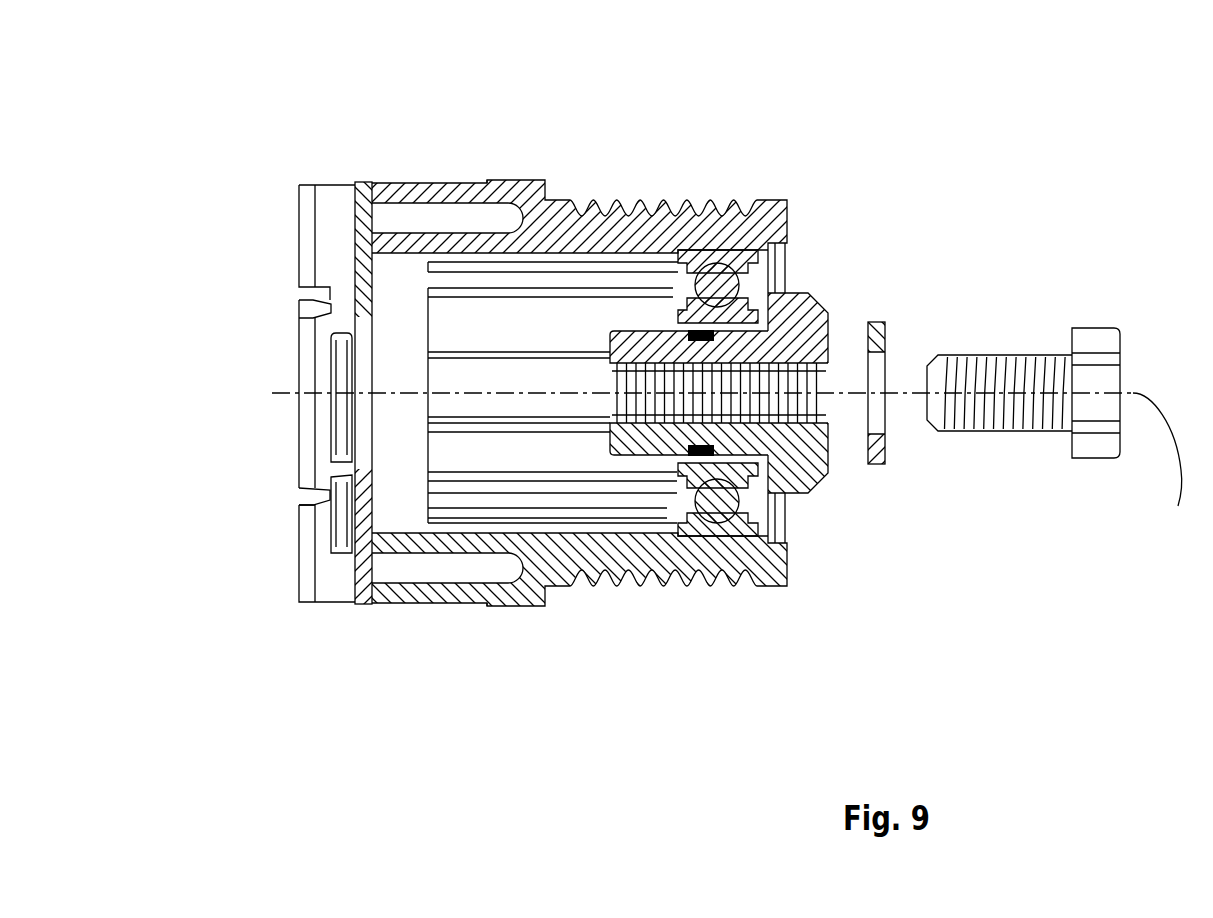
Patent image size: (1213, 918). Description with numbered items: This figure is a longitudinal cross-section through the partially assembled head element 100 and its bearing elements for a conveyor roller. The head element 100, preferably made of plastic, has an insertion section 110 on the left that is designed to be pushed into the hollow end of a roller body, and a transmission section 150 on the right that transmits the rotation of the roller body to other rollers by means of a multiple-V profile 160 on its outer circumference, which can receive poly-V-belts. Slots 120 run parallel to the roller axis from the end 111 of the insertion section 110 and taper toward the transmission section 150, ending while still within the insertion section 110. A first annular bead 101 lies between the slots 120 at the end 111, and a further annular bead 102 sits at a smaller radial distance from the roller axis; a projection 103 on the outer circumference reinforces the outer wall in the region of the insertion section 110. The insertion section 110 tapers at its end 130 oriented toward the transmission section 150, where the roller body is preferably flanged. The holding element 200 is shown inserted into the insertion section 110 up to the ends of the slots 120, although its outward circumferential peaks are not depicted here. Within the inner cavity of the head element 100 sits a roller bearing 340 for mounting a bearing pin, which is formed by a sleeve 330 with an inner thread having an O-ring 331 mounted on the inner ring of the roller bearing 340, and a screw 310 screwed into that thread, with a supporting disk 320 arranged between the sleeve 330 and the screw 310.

The head element 100 is at (663, 430).
The first annular bead 101 is at (250, 399).
The further annular bead 102 is at (337, 420).
The projection 103 is at (353, 210).
The insertion section 110 is at (318, 441).
The end of the insertion section 111 is at (300, 567).
The slots 120 is at (307, 292).
The end of the insertion section 130 is at (465, 187).
The transmission section 150 is at (583, 385).
The multiple-V profile 160 is at (600, 207).
The holding element 200 is at (550, 376).
The screw 310 is at (1098, 316).
The supporting disk 320 is at (882, 309).
The sleeve 330 is at (739, 305).
The O-ring 331 is at (692, 302).
The roller bearing 340 is at (718, 229).